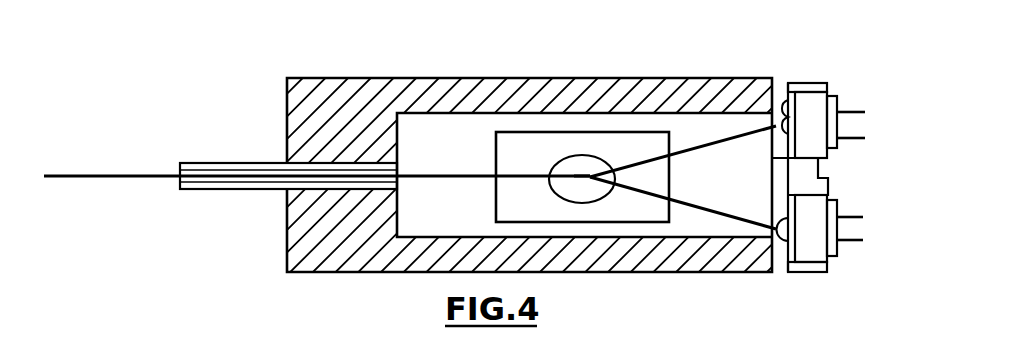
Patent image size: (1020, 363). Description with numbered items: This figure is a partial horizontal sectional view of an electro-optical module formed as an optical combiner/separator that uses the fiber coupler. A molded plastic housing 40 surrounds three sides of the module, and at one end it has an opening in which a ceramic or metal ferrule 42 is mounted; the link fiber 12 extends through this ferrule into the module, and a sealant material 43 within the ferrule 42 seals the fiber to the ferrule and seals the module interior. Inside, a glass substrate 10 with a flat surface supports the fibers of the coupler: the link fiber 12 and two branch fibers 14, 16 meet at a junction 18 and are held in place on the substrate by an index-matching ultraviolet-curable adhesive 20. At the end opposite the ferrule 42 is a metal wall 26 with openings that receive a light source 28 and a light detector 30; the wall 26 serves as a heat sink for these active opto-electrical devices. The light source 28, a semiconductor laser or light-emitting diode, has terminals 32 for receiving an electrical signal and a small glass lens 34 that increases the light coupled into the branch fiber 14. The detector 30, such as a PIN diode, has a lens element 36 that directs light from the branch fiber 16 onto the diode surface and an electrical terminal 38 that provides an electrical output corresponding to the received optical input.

The glass substrate 10 is at (496, 150).
The link fiber 12 is at (115, 175).
The branch fiber 14 is at (690, 148).
The branch fiber 16 is at (697, 204).
The junction 18 is at (568, 185).
The ultraviolet-curable adhesive 20 is at (565, 158).
The metal wall 26 is at (785, 83).
The light source 28 is at (812, 108).
The light detector 30 is at (820, 210).
The terminals 32 is at (866, 110).
The small glass lens 34 is at (775, 90).
The lens element 36 is at (782, 270).
The electrical terminal 38 is at (864, 214).
The molded plastic housing 40 is at (362, 78).
The ferrule 42 is at (235, 162).
The sealant material 43 is at (290, 196).